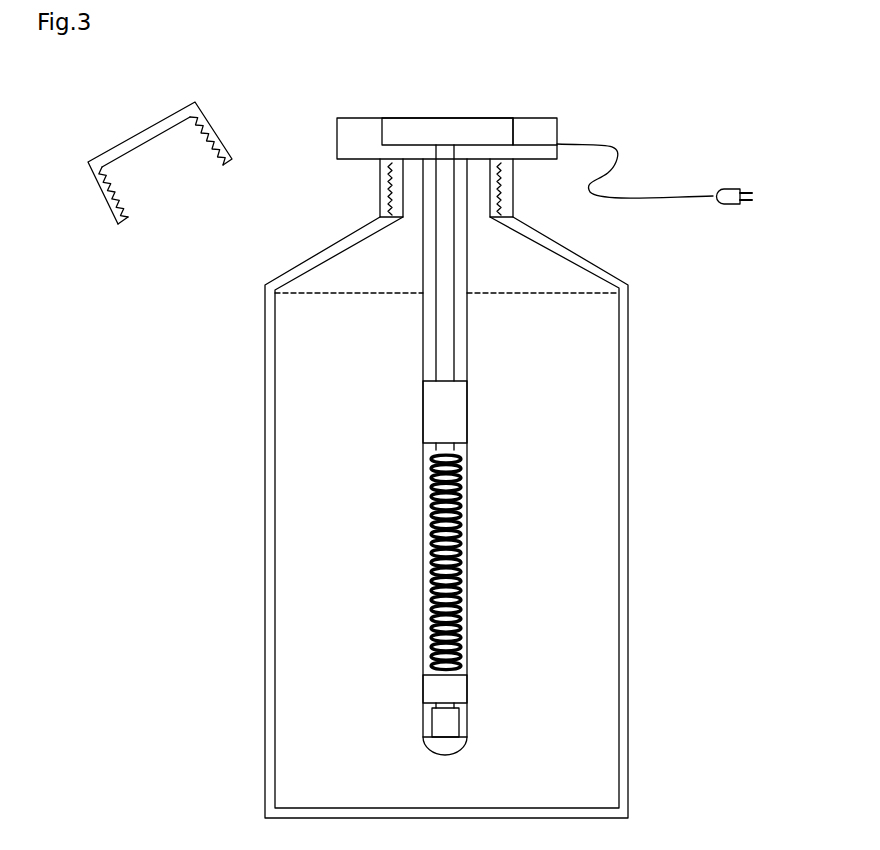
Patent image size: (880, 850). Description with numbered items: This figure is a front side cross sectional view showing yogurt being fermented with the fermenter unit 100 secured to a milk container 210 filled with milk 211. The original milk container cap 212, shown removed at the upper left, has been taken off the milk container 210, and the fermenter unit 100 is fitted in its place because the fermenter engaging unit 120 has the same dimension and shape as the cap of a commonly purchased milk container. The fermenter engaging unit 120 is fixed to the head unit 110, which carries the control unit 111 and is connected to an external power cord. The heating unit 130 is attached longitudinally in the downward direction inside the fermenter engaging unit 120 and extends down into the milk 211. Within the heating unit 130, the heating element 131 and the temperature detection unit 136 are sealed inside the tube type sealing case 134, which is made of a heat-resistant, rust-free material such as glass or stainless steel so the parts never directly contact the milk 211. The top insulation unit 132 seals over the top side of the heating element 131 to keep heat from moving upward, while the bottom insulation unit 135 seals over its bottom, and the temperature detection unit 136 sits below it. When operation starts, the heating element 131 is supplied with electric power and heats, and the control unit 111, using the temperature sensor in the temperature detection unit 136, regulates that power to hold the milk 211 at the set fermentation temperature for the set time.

The fermenter unit 100 is at (345, 142).
The head unit 110 is at (543, 132).
The control unit 111 is at (450, 127).
The fermenter engaging unit 120 is at (385, 193).
The heating unit 130 is at (458, 273).
The heating element 131 is at (462, 582).
The top insulation unit 132 is at (435, 404).
The tube type sealing case 134 is at (425, 607).
The bottom insulation unit 135 is at (433, 691).
The temperature detection unit 136 is at (440, 722).
The milk container 210 is at (623, 492).
The milk 211 is at (578, 385).
The milk container cap 212 is at (150, 132).